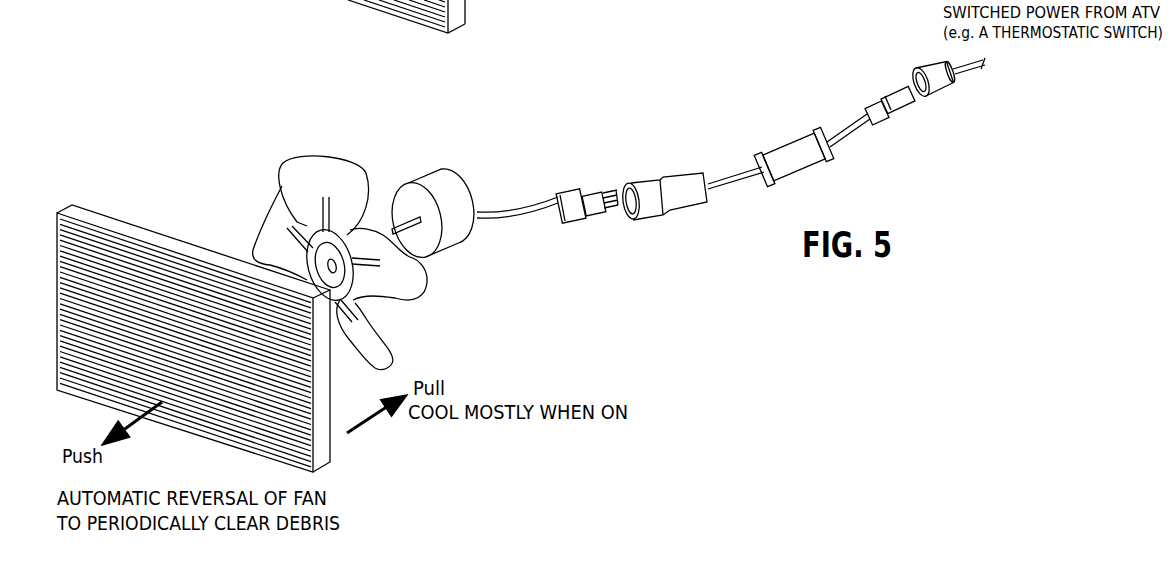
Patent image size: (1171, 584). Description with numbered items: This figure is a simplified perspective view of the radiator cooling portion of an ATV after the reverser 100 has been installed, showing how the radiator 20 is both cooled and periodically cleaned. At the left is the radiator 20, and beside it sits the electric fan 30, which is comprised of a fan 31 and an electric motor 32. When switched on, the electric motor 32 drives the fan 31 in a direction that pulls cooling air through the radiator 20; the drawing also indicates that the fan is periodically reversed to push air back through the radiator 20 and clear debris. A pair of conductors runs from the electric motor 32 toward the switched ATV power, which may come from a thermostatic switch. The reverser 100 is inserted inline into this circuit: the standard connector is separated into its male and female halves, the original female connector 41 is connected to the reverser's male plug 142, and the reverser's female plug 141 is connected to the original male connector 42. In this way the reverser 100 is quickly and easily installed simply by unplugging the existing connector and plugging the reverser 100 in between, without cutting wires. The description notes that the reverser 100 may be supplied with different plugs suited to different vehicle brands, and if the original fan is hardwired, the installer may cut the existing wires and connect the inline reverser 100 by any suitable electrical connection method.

The radiator 20 is at (72, 205).
The electric fan 30 is at (288, 138).
The fan 31 is at (310, 165).
The electric motor 32 is at (445, 180).
The male connector 42 is at (588, 218).
The female plug 141 is at (662, 212).
The reverser 100 is at (792, 116).
The male plug 142 is at (888, 113).
The female connector 41 is at (945, 88).